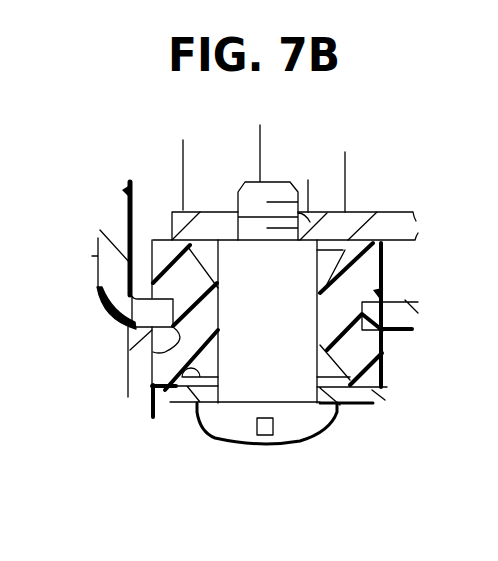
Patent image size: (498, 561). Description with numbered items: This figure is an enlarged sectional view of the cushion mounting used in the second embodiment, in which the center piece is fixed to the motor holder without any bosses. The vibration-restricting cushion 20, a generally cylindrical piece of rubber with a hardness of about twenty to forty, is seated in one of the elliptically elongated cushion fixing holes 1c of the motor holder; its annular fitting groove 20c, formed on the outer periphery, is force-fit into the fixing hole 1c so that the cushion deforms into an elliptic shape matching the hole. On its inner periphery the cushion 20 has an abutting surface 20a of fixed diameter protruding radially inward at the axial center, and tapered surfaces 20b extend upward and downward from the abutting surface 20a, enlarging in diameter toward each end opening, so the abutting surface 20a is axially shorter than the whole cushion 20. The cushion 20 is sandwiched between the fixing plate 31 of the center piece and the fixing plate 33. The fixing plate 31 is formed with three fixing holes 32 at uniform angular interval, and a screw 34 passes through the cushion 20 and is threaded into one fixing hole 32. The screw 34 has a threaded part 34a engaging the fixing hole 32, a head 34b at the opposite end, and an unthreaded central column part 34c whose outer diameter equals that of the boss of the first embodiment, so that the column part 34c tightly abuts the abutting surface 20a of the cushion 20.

The cushion fixing hole 1c is at (153, 351).
The vibration-restricting cushion 20 is at (148, 255).
The abutting surface 20a is at (307, 322).
The tapered surface 20b is at (173, 391).
The fitting groove 20c is at (363, 308).
The fixing plate 31 is at (387, 218).
The fixing hole 32 is at (238, 226).
The fixing plate 33 is at (358, 388).
The screw 34 is at (200, 434).
The threaded part 34a is at (315, 179).
The head 34b is at (302, 428).
The unthreaded central column part 34c is at (242, 388).